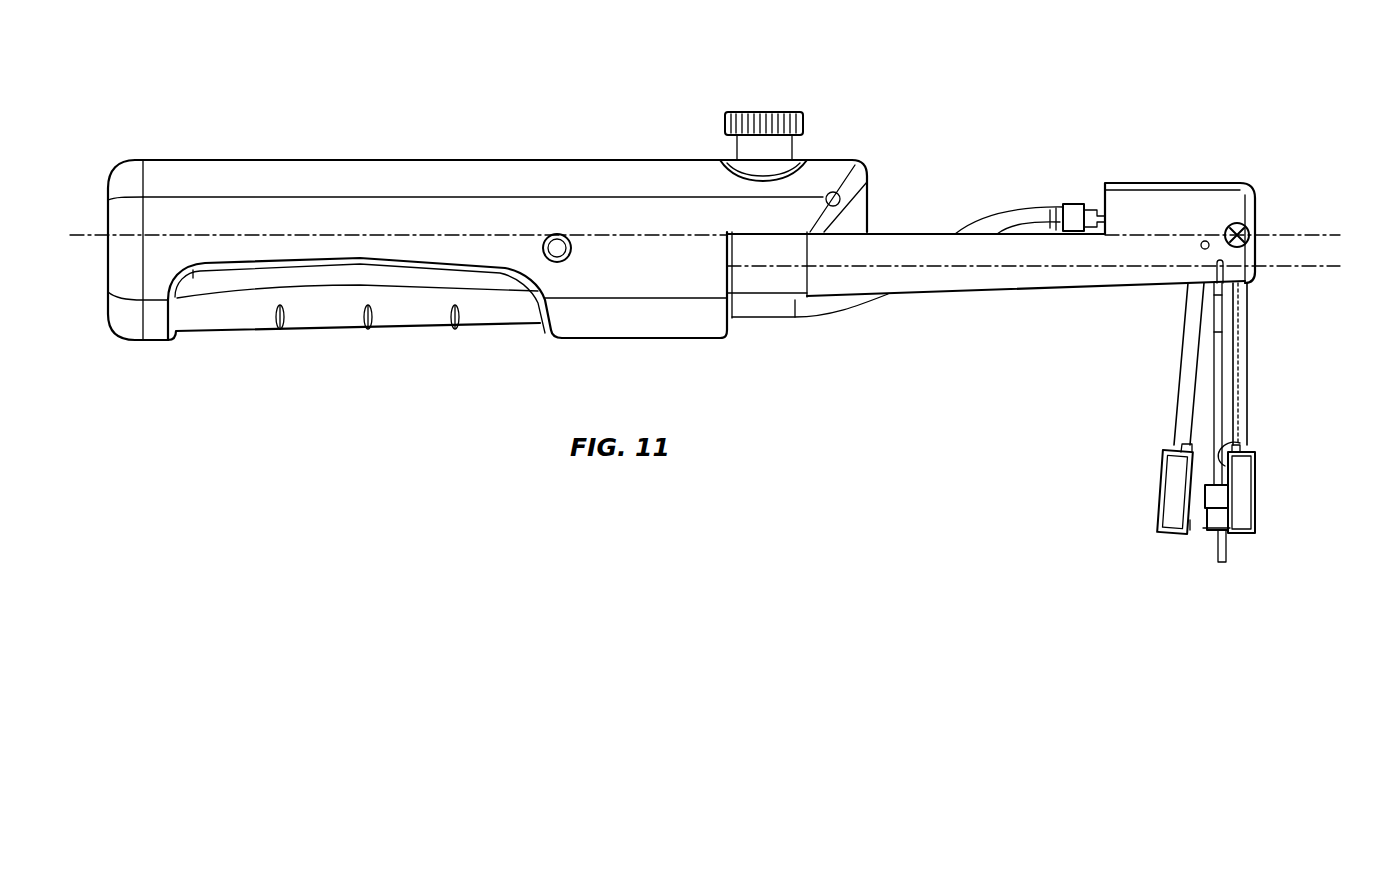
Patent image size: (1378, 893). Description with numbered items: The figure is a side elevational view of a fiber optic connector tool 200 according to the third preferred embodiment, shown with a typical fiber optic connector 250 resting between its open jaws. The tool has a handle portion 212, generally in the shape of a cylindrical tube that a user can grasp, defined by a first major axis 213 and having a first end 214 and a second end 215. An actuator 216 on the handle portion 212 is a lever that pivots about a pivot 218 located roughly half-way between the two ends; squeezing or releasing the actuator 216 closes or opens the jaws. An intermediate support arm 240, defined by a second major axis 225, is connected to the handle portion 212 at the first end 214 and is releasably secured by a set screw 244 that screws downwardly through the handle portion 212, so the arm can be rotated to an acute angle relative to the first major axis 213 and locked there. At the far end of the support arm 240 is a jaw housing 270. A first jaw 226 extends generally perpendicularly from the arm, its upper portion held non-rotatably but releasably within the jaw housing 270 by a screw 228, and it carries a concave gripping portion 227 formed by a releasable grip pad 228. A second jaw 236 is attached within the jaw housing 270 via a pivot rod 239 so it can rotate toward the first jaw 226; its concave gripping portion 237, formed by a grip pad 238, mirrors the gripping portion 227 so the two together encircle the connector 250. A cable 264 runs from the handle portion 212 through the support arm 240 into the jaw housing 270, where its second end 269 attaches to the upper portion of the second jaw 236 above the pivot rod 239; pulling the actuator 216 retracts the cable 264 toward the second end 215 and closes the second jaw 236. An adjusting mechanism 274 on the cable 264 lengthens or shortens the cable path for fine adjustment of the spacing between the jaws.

The fiber optic connector tool 200 is at (412, 76).
The handle portion 212 is at (459, 229).
The first major axis 213 is at (1272, 233).
The first end 214 is at (855, 170).
The second end 215 is at (130, 172).
The actuator 216 is at (335, 318).
The pivot 218 is at (572, 250).
The second major axis 225 is at (1272, 268).
The first jaw 226 is at (1250, 386).
The gripping portion 227 is at (1224, 448).
The screw / grip pad 228 is at (1255, 186).
The second jaw 236 is at (1182, 378).
The gripping portion 237 is at (1190, 520).
The grip pad 238 is at (1165, 490).
The pivot rod 239 is at (1203, 240).
The intermediate support arm 240 is at (970, 280).
The set screw 244 is at (752, 112).
The fiber optic connector 250 is at (1213, 533).
The cable 264 is at (777, 312).
The second end of cable 269 is at (1096, 194).
The jaw housing 270 is at (1192, 183).
The adjusting mechanism 274 is at (1070, 203).